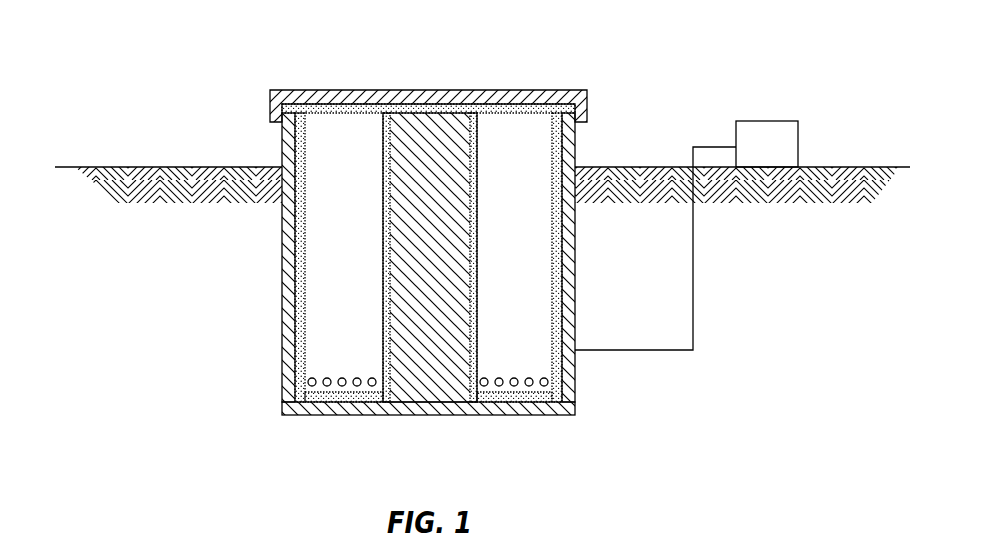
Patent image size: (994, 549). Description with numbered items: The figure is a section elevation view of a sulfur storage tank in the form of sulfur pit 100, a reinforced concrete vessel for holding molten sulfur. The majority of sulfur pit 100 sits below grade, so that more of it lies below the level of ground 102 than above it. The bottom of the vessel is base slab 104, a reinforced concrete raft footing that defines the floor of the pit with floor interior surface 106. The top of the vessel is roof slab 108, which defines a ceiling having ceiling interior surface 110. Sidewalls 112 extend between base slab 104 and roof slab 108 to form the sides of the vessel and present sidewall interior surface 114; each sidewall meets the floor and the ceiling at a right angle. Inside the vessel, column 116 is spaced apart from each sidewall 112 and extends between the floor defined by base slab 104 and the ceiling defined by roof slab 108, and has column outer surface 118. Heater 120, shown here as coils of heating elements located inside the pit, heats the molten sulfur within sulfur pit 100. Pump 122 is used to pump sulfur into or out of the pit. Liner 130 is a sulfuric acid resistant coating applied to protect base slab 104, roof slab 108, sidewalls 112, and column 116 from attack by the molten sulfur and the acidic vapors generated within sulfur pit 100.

The sulfur pit 100 is at (575, 48).
The ground 102 is at (145, 166).
The base slab 104 is at (370, 417).
The floor interior surface 106 is at (515, 388).
The roof slab 108 is at (333, 90).
The ceiling interior surface 110 is at (495, 105).
The sidewalls 112 is at (282, 278).
The sidewall interior surface 114 is at (303, 338).
The column 116 is at (452, 300).
The column outer surface 118 is at (383, 198).
The heater 120 is at (308, 384).
The pump 122 is at (778, 121).
The liner 130 is at (283, 238).